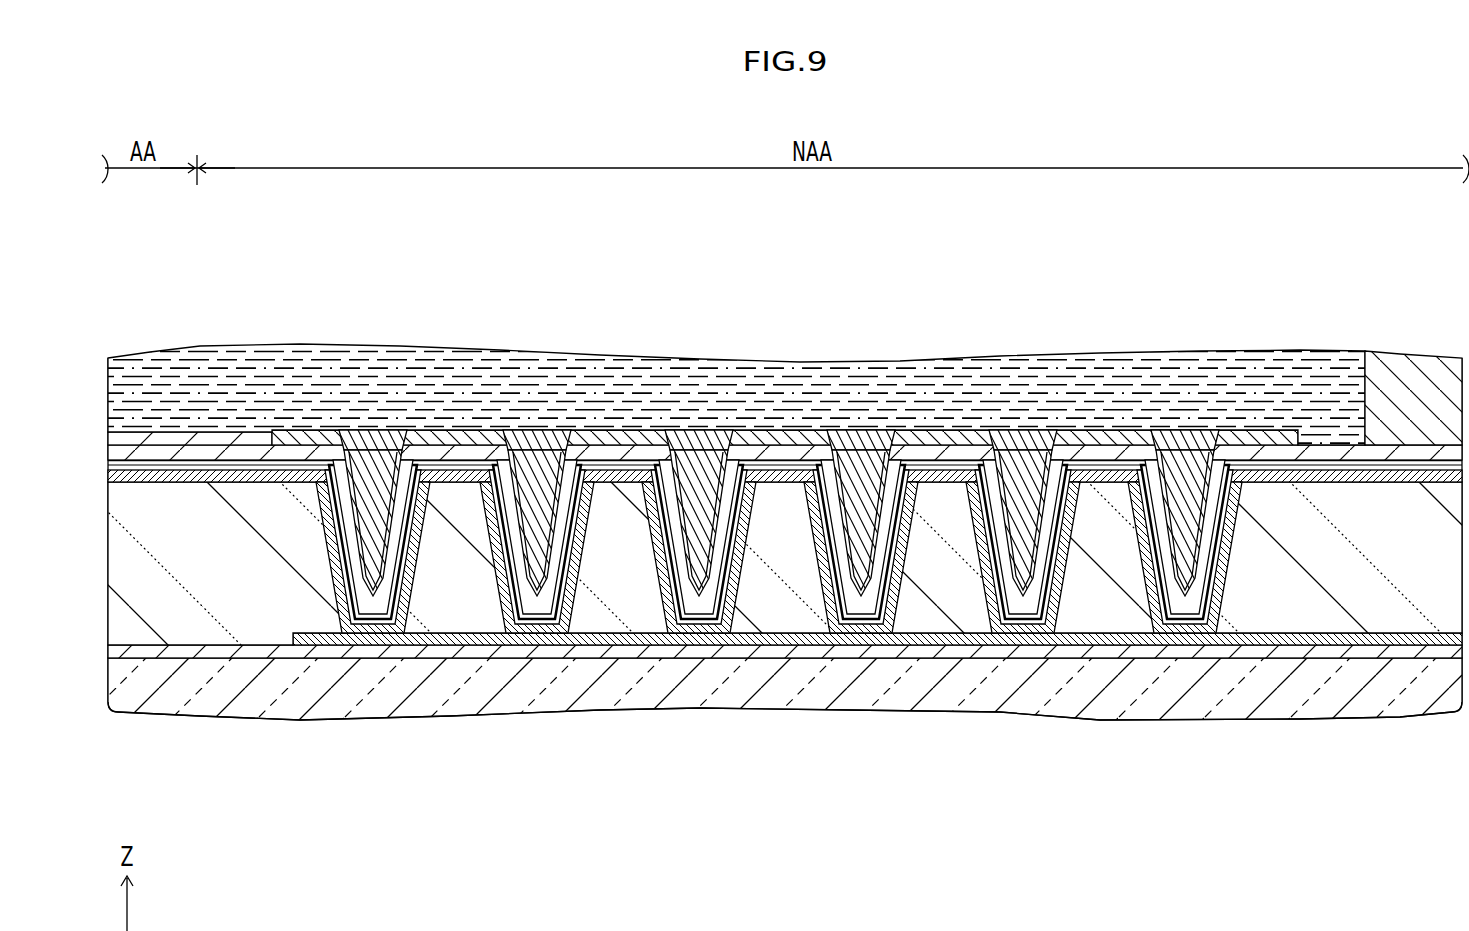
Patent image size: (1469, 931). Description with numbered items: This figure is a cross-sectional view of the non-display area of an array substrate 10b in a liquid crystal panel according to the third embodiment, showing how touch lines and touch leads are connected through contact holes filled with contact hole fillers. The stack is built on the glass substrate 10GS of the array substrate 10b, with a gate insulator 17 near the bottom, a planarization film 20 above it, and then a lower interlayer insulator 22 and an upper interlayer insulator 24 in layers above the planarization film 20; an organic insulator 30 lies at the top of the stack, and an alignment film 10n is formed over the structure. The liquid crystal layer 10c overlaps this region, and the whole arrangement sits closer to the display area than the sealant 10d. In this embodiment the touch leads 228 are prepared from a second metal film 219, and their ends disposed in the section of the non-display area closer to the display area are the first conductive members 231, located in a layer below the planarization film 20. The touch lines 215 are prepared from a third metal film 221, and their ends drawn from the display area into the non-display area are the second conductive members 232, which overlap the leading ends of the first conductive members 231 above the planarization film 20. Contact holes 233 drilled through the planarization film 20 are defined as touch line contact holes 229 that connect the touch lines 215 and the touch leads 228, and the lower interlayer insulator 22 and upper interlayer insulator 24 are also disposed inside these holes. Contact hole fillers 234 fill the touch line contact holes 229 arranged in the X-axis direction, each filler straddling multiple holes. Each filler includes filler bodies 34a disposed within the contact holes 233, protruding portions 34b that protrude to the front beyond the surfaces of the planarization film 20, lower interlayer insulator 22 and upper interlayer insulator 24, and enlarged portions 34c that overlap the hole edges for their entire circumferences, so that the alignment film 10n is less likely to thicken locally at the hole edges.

The array substrate 10b is at (692, 693).
The glass substrate 10GS is at (873, 690).
The liquid crystal layer 10c is at (985, 400).
The sealant 10d is at (1405, 395).
The alignment film 10n is at (152, 437).
The gate insulator 17 is at (247, 650).
The planarization film 20 is at (210, 590).
The lower interlayer insulator 22 is at (195, 455).
The upper interlayer insulator 24 is at (170, 462).
The touch line 215 is at (785, 347).
The third metal film 221 is at (228, 470).
The touch lead 228 is at (877, 723).
The second metal film 219 is at (1287, 643).
The first conductive member 231 is at (398, 626).
The second conductive member 232 is at (385, 638).
The contact hole 233 is at (745, 645).
The touch line contact hole 229 is at (340, 590).
The contact hole filler 234 is at (764, 349).
The organic insulator 30 is at (285, 437).
The filler body 34a is at (378, 475).
The protruding portion 34b is at (373, 510).
The enlarged portion 34c is at (313, 437).